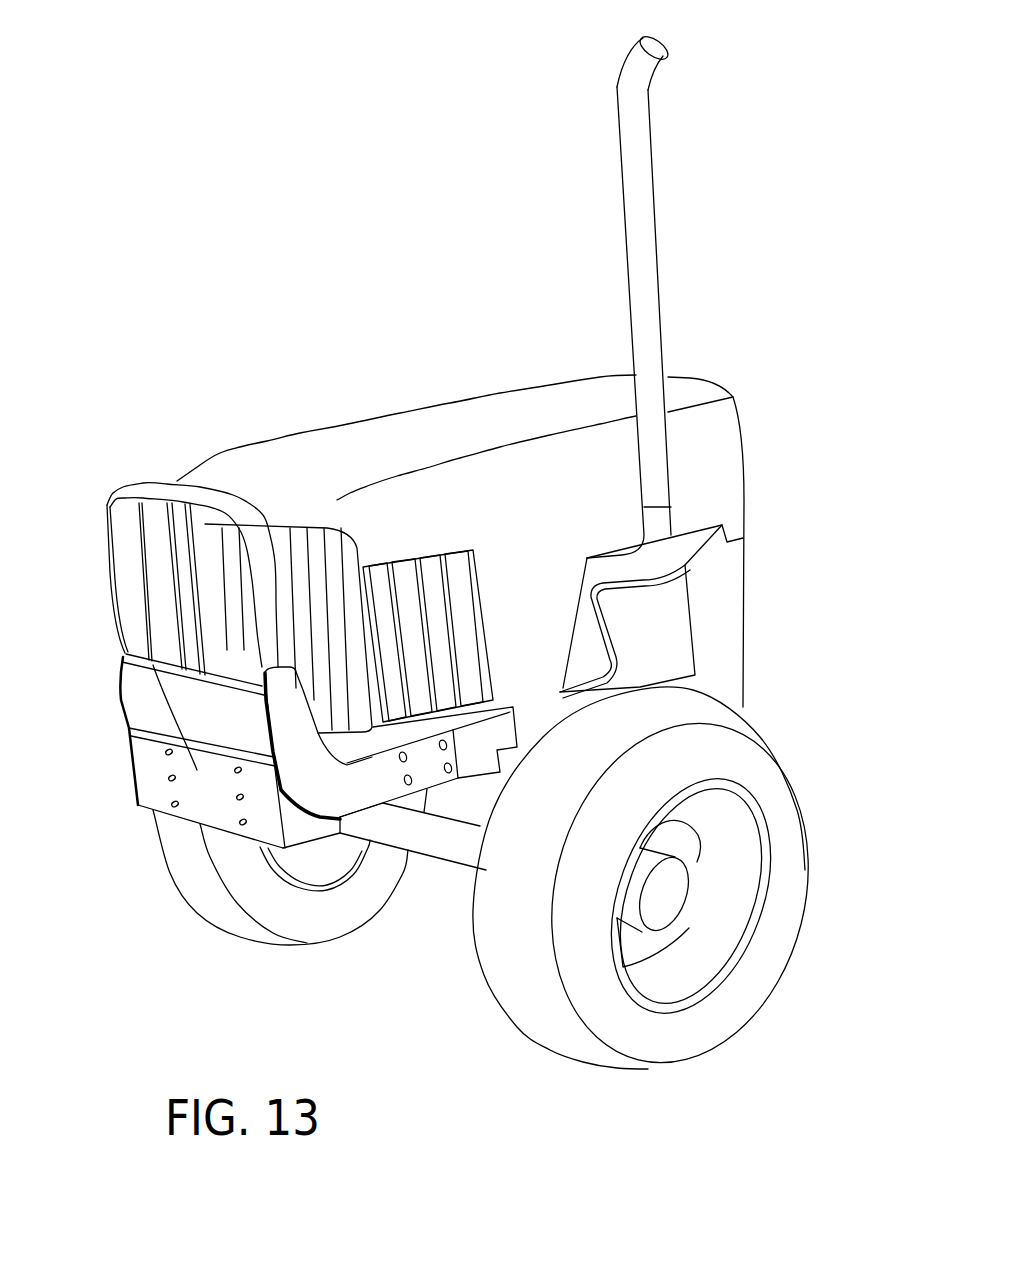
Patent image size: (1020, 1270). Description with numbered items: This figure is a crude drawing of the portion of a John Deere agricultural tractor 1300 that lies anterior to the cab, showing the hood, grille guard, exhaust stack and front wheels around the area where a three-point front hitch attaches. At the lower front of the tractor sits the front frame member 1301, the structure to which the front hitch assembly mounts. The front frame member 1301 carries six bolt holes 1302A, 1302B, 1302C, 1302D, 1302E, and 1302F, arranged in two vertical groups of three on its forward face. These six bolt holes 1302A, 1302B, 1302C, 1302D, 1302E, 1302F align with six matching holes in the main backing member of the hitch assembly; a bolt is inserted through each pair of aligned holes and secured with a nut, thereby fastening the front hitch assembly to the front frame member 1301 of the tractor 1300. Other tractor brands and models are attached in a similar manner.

The agricultural tractor 1300 is at (440, 561).
The front frame member 1301 is at (161, 777).
The bolt hole 1302A is at (160, 750).
The bolt hole 1302B is at (163, 777).
The bolt hole 1302C is at (166, 804).
The bolt hole 1302D is at (233, 771).
The bolt hole 1302E is at (237, 799).
The bolt hole 1302F is at (242, 824).